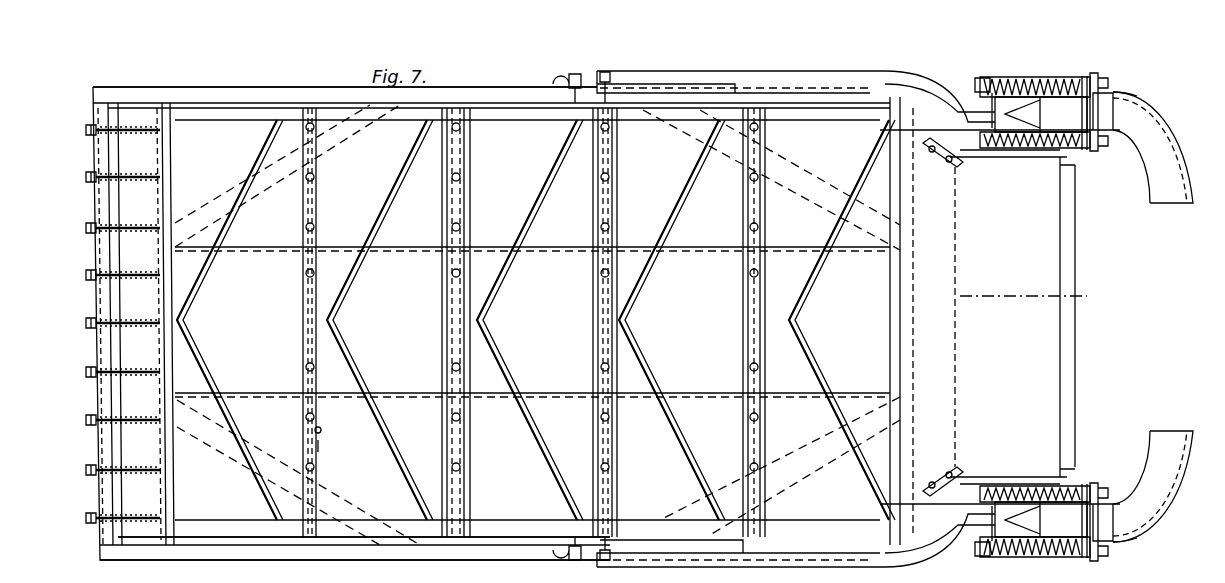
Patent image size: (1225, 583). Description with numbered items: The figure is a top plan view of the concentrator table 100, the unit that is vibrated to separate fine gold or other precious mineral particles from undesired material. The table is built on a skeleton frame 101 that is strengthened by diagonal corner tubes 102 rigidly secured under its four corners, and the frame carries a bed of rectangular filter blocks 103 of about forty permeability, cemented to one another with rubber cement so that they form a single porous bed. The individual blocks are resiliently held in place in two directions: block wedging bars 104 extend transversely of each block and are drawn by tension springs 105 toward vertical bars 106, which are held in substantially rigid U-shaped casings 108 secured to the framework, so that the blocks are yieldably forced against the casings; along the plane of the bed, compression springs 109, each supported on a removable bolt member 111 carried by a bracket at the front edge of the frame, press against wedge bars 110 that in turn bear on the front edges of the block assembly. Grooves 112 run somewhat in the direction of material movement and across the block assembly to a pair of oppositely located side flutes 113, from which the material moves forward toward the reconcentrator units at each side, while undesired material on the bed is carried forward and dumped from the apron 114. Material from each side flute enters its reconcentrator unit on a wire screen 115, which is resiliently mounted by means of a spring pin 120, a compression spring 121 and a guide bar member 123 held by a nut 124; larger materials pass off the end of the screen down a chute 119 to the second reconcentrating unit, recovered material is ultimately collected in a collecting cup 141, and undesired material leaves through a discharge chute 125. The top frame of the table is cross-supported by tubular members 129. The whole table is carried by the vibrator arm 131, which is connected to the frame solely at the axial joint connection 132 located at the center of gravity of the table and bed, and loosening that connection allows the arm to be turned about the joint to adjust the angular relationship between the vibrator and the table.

The concentrator table 100 is at (388, 495).
The skeleton frame 101 is at (98, 347).
The diagonal corner tubes 102 is at (702, 128).
The filter blocks 103 is at (318, 110).
The block wedging bars 104 is at (596, 375).
The tension springs 105 is at (320, 430).
The vertical bars 106 is at (324, 446).
The U-shaped casing 108 is at (302, 412).
The compression springs 109 is at (142, 226).
The wedge bars 110 is at (160, 312).
The removable bolt member 111 is at (88, 228).
The grooves 112 is at (200, 345).
The side flutes 113 is at (521, 120).
The apron 114 is at (1067, 296).
The screen 115 is at (980, 94).
The chute 119 is at (1012, 107).
The spring pin 120 is at (1057, 133).
The compression spring 121 is at (1057, 93).
The guide bar member 123 is at (1123, 93).
The nut 124 is at (1096, 82).
The discharge chute 125 is at (1160, 188).
The tubular members 129 is at (442, 294).
The vibrator arm 131 is at (820, 74).
The axial joint connection 132 is at (565, 86).
The collecting cup 141 is at (1106, 118).